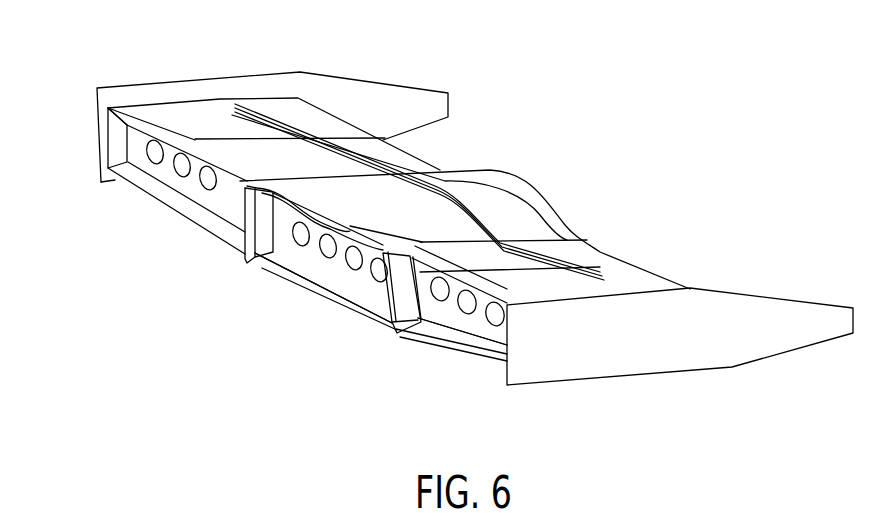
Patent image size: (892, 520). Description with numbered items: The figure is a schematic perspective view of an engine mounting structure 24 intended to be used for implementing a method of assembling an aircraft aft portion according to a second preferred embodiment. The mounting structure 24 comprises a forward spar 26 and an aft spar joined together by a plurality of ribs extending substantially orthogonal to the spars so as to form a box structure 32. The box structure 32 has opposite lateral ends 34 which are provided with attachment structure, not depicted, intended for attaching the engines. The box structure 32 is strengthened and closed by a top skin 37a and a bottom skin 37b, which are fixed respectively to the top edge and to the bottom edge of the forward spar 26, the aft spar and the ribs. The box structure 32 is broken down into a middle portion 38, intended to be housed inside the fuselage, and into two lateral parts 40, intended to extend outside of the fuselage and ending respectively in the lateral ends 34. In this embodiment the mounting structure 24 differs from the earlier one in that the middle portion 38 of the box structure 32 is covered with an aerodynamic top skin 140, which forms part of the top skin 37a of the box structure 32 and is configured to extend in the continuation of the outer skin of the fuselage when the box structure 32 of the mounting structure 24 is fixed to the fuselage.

The mounting structure 24 is at (264, 234).
The box structure 32 is at (147, 190).
The forward spar 26 is at (453, 313).
The lateral ends 34 is at (200, 80).
The top skin 37a is at (393, 168).
The bottom skin 37b is at (360, 312).
The middle portion 38 is at (294, 268).
The lateral parts 40 is at (180, 120).
The aerodynamic top skin 140 is at (507, 202).